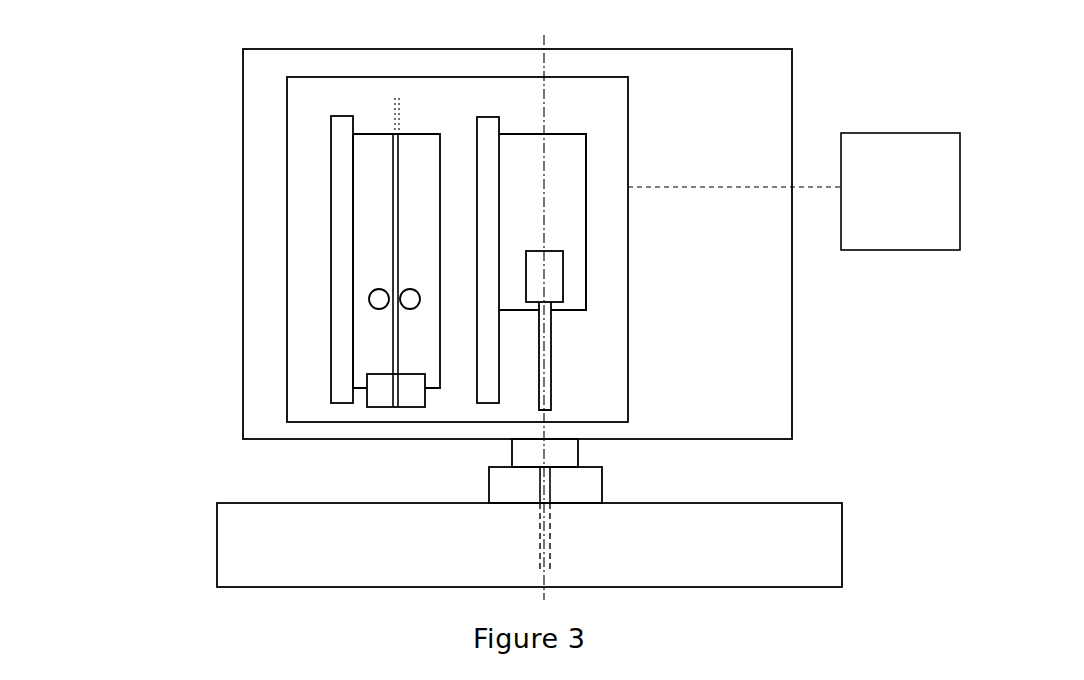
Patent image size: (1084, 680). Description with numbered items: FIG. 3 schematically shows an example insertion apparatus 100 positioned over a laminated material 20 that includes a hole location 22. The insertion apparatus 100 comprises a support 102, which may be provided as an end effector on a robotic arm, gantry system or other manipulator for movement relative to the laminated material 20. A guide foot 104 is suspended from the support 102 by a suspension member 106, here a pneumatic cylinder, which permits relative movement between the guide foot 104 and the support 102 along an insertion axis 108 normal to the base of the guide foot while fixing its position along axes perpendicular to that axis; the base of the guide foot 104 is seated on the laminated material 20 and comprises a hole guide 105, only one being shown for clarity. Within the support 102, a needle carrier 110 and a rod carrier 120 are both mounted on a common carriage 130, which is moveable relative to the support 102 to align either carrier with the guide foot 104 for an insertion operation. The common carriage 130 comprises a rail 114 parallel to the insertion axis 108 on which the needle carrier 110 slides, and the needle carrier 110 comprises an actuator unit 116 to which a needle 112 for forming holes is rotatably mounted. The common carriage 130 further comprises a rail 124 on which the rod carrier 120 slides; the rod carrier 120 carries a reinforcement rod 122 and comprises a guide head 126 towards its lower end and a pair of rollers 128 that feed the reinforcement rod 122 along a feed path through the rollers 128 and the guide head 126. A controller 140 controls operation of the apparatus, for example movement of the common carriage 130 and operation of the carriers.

The insertion apparatus 100 is at (141, 149).
The support 102 is at (792, 320).
The guide foot 104 is at (602, 483).
The hole guide 105 is at (550, 488).
The suspension member 106 is at (512, 450).
The insertion axis 108 is at (545, 223).
The needle carrier 110 is at (563, 134).
The needle 112 is at (551, 365).
The rail 114 is at (487, 117).
The actuator unit 116 is at (563, 277).
The rod carrier 120 is at (373, 132).
The reinforcement rod 122 is at (397, 339).
The rail 124 is at (342, 193).
The guide head 126 is at (378, 408).
The rollers 128 is at (377, 290).
The common carriage 130 is at (630, 121).
The controller 140 is at (794, 191).
The laminated material 20 is at (842, 542).
The hole location 22 is at (550, 547).